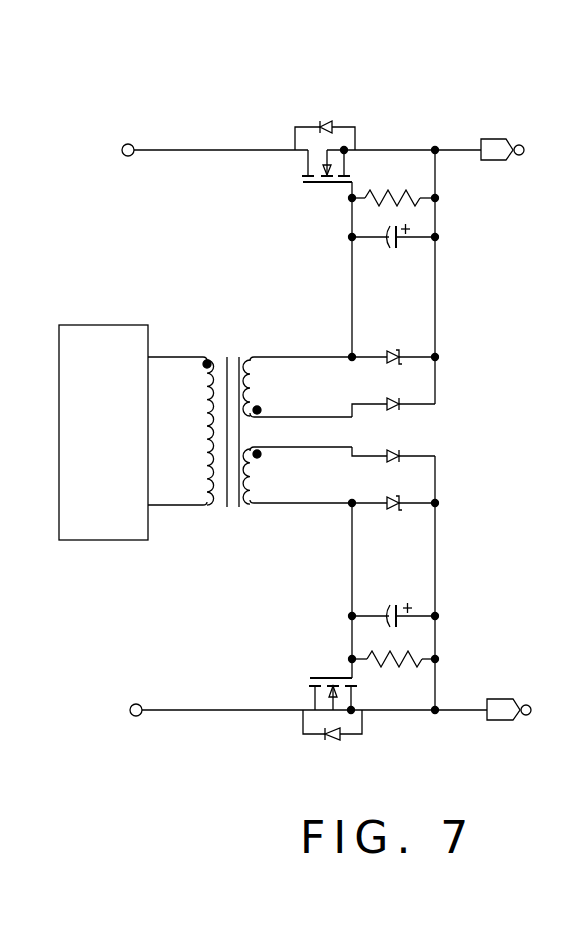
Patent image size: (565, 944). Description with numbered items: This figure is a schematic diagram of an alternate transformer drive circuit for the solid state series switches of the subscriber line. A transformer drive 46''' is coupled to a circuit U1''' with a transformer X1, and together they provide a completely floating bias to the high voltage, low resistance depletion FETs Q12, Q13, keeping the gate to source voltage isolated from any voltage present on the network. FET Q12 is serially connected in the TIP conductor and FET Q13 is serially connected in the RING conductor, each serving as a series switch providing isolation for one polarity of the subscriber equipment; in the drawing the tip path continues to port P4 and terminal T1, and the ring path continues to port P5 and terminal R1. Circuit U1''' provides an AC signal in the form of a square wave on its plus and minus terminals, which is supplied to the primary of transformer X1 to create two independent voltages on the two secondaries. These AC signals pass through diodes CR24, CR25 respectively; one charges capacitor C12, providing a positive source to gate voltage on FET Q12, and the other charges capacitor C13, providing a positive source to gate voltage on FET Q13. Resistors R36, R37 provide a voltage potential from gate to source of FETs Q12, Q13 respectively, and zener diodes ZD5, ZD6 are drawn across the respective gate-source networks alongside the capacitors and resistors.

The tip conductor TIP is at (209, 142).
The ring conductor RING is at (299, 702).
The depletion FET Q12 is at (313, 144).
The depletion FET Q13 is at (316, 708).
The resistor R36 is at (394, 189).
The resistor R37 is at (394, 651).
The capacitor C12 is at (394, 246).
The capacitor C13 is at (394, 606).
The zener diode ZD5 is at (394, 345).
The zener diode ZD6 is at (394, 493).
The diode CR24 is at (393, 397).
The diode CR25 is at (393, 446).
The transformer X1 is at (250, 432).
The circuit U1''' is at (97, 416).
The transformer drive 46''' is at (187, 292).
The port P4 is at (497, 149).
The port P5 is at (503, 709).
The tip output terminal T1 is at (528, 151).
The ring output terminal R1 is at (536, 711).